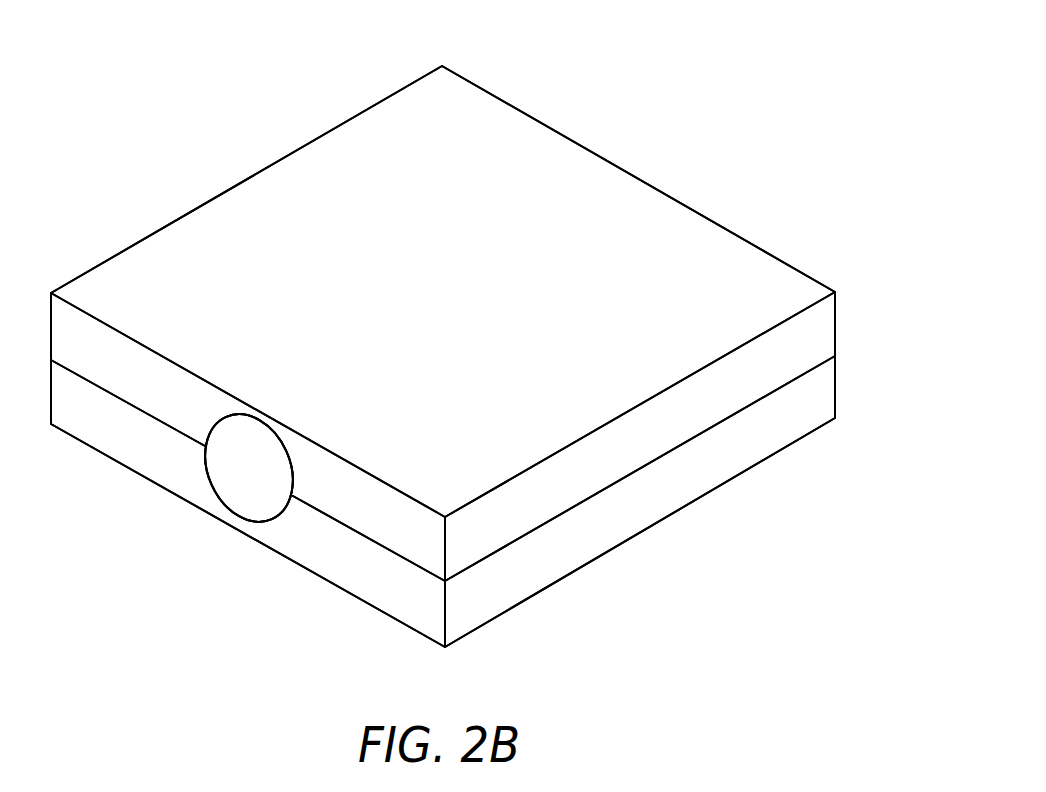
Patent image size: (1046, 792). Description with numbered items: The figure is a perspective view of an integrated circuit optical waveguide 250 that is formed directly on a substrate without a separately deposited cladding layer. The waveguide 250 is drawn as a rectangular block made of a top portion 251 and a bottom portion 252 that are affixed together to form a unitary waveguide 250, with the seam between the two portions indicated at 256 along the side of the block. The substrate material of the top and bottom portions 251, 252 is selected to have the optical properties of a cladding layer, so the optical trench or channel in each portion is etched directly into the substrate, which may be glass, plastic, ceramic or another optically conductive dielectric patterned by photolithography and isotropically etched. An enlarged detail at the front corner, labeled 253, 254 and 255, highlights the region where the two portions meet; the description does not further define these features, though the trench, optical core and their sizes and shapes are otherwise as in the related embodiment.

The waveguide 250 is at (804, 106).
The top portion 251 is at (624, 158).
The bottom portion 252 is at (675, 525).
The bonding region 253 is at (221, 413).
The bond interface 254 is at (283, 519).
The contact area 255 is at (270, 480).
The interface between layers 256 is at (803, 376).